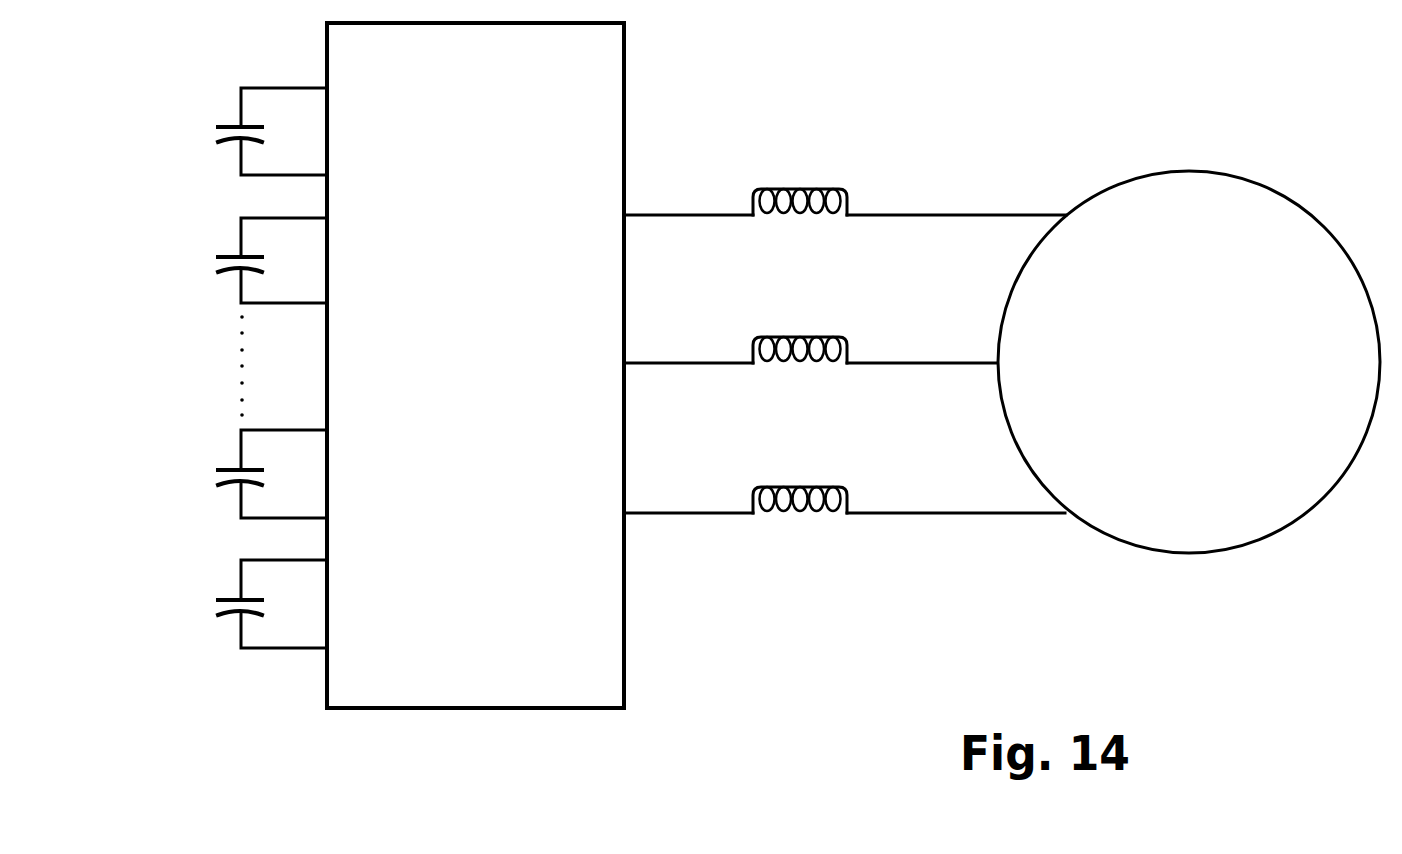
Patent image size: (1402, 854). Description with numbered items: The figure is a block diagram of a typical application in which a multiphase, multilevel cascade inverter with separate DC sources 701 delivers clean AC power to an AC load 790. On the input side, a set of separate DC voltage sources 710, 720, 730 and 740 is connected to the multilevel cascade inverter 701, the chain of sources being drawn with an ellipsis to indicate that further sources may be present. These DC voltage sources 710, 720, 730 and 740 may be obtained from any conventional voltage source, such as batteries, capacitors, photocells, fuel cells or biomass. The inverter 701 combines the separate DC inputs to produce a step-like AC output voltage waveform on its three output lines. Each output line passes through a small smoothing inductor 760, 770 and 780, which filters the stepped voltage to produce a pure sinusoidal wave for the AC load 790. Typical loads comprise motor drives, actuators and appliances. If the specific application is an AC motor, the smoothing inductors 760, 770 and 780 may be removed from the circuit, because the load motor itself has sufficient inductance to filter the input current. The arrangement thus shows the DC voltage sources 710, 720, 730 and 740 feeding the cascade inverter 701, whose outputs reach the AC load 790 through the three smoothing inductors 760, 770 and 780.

The multilevel cascade inverter 701 is at (510, 392).
The separate DC voltage source 710 is at (215, 132).
The separate DC voltage source 720 is at (215, 261).
The separate DC voltage source 730 is at (215, 474).
The separate DC voltage source 740 is at (215, 604).
The smoothing inductor 760 is at (802, 182).
The smoothing inductor 770 is at (802, 332).
The smoothing inductor 780 is at (802, 482).
The AC load 790 is at (1225, 386).